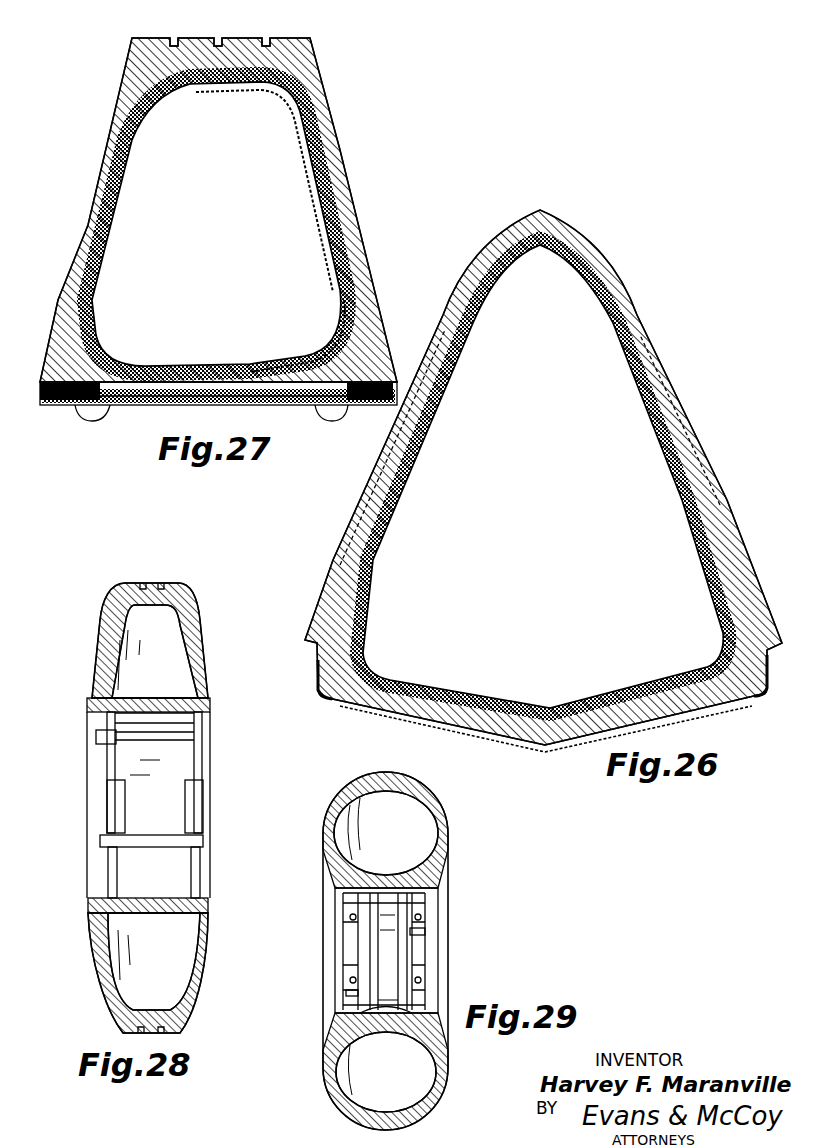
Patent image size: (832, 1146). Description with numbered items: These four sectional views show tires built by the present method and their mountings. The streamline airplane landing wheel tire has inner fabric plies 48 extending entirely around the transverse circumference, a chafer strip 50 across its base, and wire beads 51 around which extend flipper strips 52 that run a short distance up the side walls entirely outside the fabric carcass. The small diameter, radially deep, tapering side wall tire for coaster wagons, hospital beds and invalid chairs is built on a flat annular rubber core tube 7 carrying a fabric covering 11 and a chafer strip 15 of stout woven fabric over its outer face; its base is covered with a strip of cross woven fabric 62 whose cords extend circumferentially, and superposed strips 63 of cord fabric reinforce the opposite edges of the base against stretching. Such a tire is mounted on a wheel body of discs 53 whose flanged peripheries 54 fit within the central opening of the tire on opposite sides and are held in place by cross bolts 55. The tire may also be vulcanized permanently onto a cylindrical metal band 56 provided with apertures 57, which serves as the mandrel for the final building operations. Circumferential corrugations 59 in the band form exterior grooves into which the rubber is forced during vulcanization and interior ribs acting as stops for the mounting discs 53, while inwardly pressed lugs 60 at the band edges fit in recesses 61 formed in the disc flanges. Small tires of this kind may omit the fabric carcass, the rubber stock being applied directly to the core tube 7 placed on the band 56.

In FIG. 27, the tube 7 is at (328, 242).
In FIG. 28, the tube 7 is at (196, 632).
In FIG. 29, the tube 7 is at (436, 822).
In FIG. 27, the fabric covering 11 is at (309, 178).
In FIG. 27, the chafer strip 15 is at (368, 293).
In FIG. 27, the strip of cross woven fabric 62 is at (240, 408).
In FIG. 27, the strips 63 is at (397, 383).
In FIG. 27, the circumferential corrugations 59 is at (92, 421).
In FIG. 28, the circumferential corrugations 59 is at (110, 899).
In FIG. 29, the circumferential corrugations 59 is at (388, 1015).
In FIG. 26, the inner fabric plies 48 is at (398, 525).
In FIG. 26, the flipper strips 52 is at (747, 562).
In FIG. 26, the wire beads 51 is at (322, 698).
In FIG. 26, the chafer strip 50 is at (418, 720).
In FIG. 28, the flanged peripheries 54 is at (212, 709).
In FIG. 28, the recesses 61 is at (92, 821).
In FIG. 28, the cross bolts 55 is at (112, 736).
In FIG. 28, the discs 53 is at (205, 842).
In FIG. 29, the cylindrical metal band 56 is at (348, 968).
In FIG. 29, the apertures 57 is at (421, 920).
In FIG. 29, the inwardly pressed lugs 60 is at (426, 932).